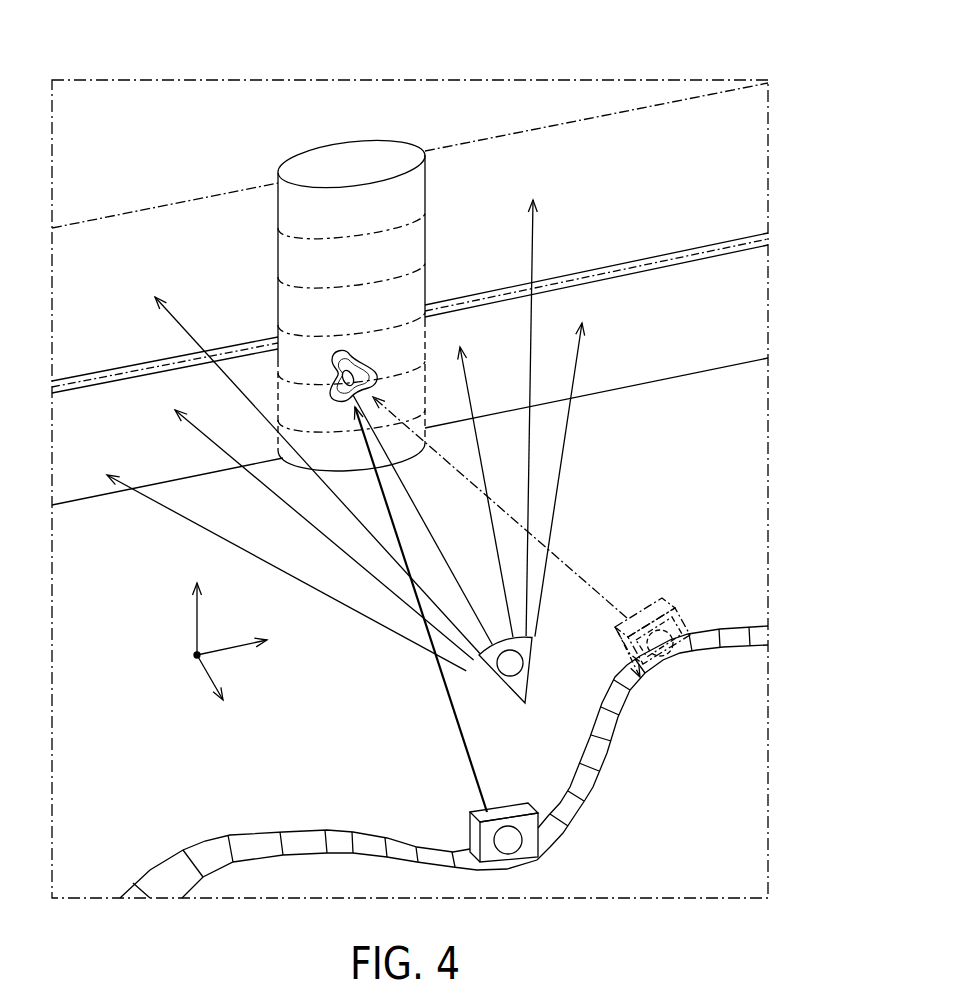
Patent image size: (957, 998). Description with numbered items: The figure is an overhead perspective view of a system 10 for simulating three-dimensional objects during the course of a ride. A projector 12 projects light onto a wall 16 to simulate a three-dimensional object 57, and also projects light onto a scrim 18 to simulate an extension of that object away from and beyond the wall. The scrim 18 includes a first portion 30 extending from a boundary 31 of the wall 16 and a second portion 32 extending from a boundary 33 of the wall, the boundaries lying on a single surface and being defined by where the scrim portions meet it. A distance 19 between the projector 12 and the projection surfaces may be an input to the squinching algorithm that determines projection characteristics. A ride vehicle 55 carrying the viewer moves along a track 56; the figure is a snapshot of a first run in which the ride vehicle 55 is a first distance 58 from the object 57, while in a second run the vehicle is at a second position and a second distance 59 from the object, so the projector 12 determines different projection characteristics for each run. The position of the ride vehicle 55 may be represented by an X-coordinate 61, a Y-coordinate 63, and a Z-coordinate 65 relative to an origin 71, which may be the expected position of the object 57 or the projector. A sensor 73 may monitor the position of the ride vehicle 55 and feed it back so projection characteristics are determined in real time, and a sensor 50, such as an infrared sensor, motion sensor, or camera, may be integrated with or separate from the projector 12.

The system 10 is at (210, 53).
The projector 12 is at (538, 693).
The wall 16 is at (351, 283).
The scrim 18 is at (410, 271).
The distance 19 is at (483, 575).
The first portion 30 is at (195, 200).
The boundary 31 is at (280, 172).
The second portion 32 is at (597, 117).
The boundary 33 is at (424, 160).
The sensor 50 is at (532, 650).
The ride vehicle 55 is at (505, 815).
The track 56 is at (594, 790).
The 3-D object 57 is at (358, 360).
The distance 58 is at (449, 712).
The distance 59 is at (575, 562).
The X-coordinate 61 is at (228, 651).
The Y-coordinate 63 is at (205, 672).
The Z-coordinate 65 is at (193, 613).
The origin 71 is at (213, 653).
The sensor 73 is at (540, 855).